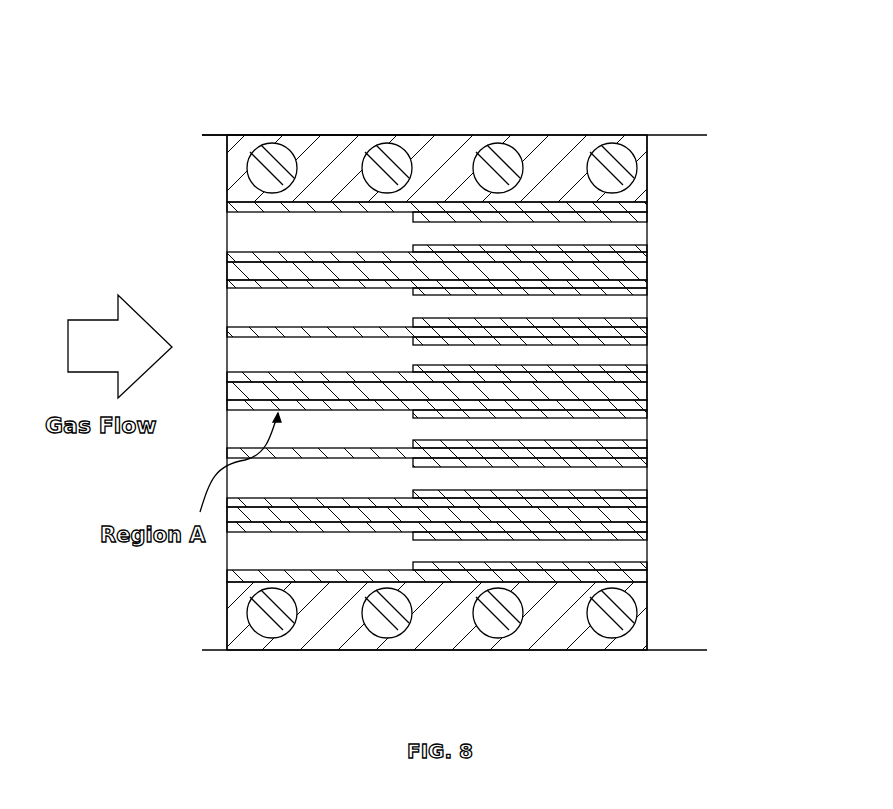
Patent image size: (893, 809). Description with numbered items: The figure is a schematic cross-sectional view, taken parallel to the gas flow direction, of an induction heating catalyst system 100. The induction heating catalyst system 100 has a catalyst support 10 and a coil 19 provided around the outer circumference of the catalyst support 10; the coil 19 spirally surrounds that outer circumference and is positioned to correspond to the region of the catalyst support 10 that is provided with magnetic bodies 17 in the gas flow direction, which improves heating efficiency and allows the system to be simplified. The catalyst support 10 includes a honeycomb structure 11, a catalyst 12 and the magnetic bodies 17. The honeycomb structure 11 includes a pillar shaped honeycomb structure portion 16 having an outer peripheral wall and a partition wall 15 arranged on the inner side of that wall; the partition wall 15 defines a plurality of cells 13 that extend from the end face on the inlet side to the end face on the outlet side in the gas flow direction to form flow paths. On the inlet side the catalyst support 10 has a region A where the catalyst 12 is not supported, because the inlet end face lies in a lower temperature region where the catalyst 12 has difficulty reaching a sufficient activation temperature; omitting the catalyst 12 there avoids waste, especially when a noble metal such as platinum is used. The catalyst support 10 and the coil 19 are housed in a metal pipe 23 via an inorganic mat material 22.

The induction heating catalyst system 100 is at (458, 110).
The catalyst support 10 is at (548, 198).
The honeycomb structure 11 is at (650, 238).
The catalyst 12 is at (648, 445).
The cells 13 is at (240, 327).
The partition wall 15 is at (648, 503).
The pillar shaped honeycomb structure portion 16 is at (224, 556).
The magnetic bodies 17 is at (648, 392).
The coil 19 is at (277, 138).
The inorganic mat material 22 is at (632, 140).
The metal pipe 23 is at (213, 137).